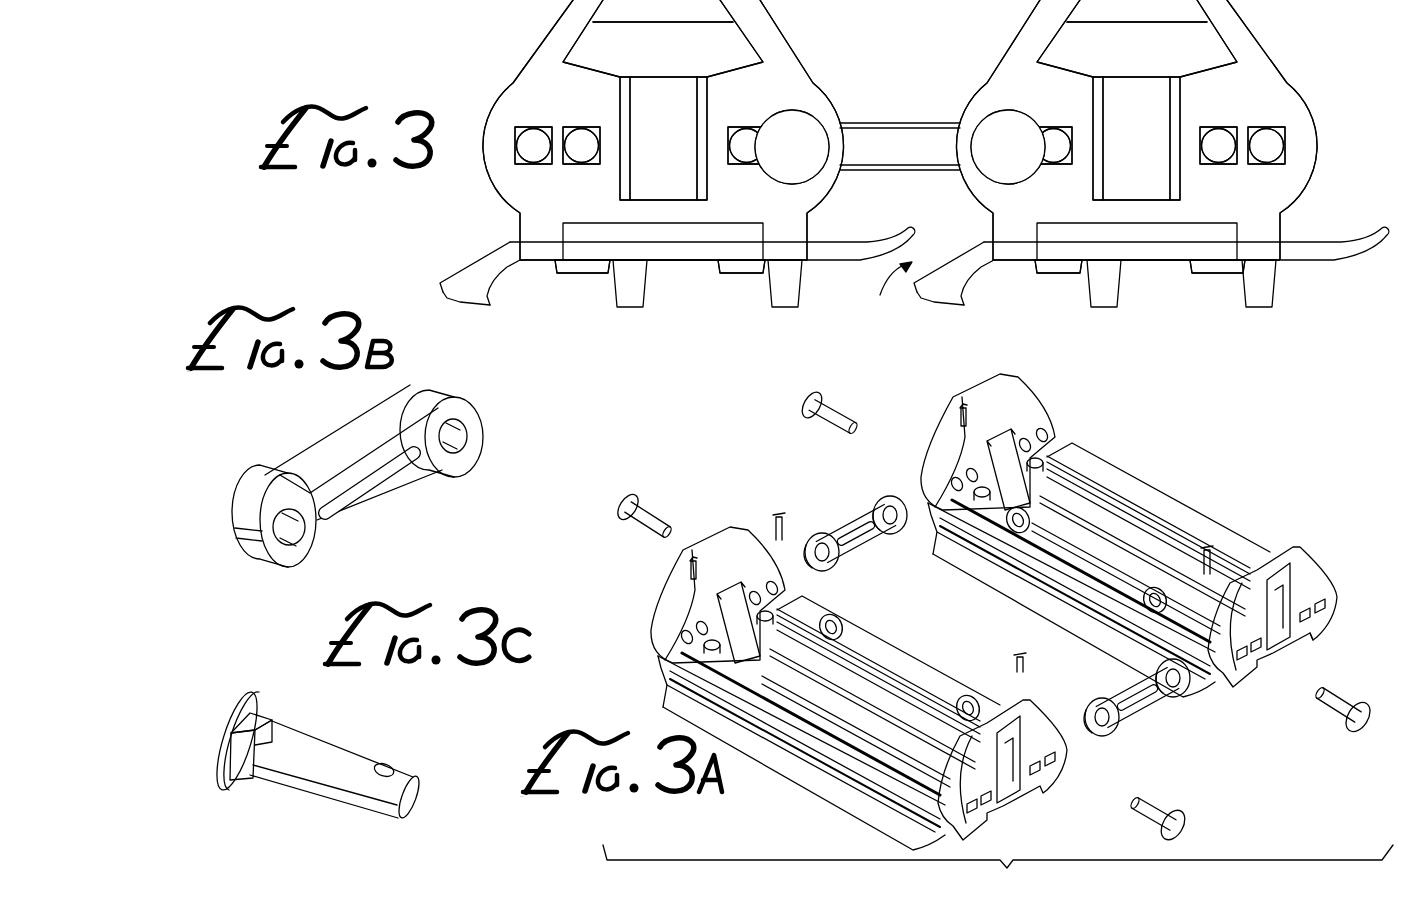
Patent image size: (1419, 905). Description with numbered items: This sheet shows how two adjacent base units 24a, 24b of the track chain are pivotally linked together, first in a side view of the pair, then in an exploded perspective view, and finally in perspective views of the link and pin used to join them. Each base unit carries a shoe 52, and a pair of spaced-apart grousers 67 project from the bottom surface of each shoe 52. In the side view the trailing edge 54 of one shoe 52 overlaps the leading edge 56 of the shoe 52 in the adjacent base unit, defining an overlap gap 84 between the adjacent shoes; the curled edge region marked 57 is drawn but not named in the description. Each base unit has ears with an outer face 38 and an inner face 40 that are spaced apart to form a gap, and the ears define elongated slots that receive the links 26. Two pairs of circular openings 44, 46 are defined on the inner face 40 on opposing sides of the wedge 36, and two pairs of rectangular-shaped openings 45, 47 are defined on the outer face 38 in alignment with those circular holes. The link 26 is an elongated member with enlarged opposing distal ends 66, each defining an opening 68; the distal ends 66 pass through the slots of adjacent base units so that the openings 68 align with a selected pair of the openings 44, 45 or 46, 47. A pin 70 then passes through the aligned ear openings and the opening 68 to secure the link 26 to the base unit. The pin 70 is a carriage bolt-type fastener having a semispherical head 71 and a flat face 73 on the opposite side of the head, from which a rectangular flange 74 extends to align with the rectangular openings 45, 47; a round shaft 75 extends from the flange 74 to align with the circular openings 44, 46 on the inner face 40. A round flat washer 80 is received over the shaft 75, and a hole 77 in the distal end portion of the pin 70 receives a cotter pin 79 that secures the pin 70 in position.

In FIG. 3, the base unit 24a is at (783, 80).
In FIG. 3, the base unit 24b is at (1297, 115).
In FIG. 3, the link 26 is at (910, 122).
In FIG. 3B, the link 26 is at (322, 457).
In FIG. 3A, the link 26 is at (847, 523).
In FIG. 3A, the wedge 36 is at (1000, 443).
In FIG. 3, the outer face 38 is at (537, 88).
In FIG. 3A, the outer face 38 is at (1322, 582).
In FIG. 3A, the inner face 40 is at (700, 610).
In FIG. 3A, the circular opening 44 is at (1022, 440).
In FIG. 3A, the rectangular-shaped opening 45 is at (1312, 613).
In FIG. 3A, the circular opening 46 is at (1043, 437).
In FIG. 3A, the rectangular-shaped opening 47 is at (1330, 605).
In FIG. 3, the shoe 52 is at (678, 250).
In FIG. 3, the trailing edge 54 is at (447, 277).
In FIG. 3, the leading edge 56 is at (870, 245).
In FIG. 3, the lip 57 is at (475, 296).
In FIG. 3B, the distal end 66 is at (457, 394).
In FIG. 3, the grouser 67 is at (637, 280).
In FIG. 3B, the opening 68 is at (458, 438).
In FIG. 3C, the pin 70 is at (303, 787).
In FIG. 3A, the pin 70 is at (623, 499).
In FIG. 3C, the semispherical head 71 is at (217, 737).
In FIG. 3C, the flat face 73 is at (258, 706).
In FIG. 3C, the rectangular flange 74 is at (257, 723).
In FIG. 3C, the round shaft 75 is at (327, 757).
In FIG. 3C, the hole 77 is at (388, 767).
In FIG. 3A, the cotter pin 79 is at (773, 517).
In FIG. 3A, the round flat washer 80 is at (840, 626).
In FIG. 3, the overlap gap 84 is at (890, 293).